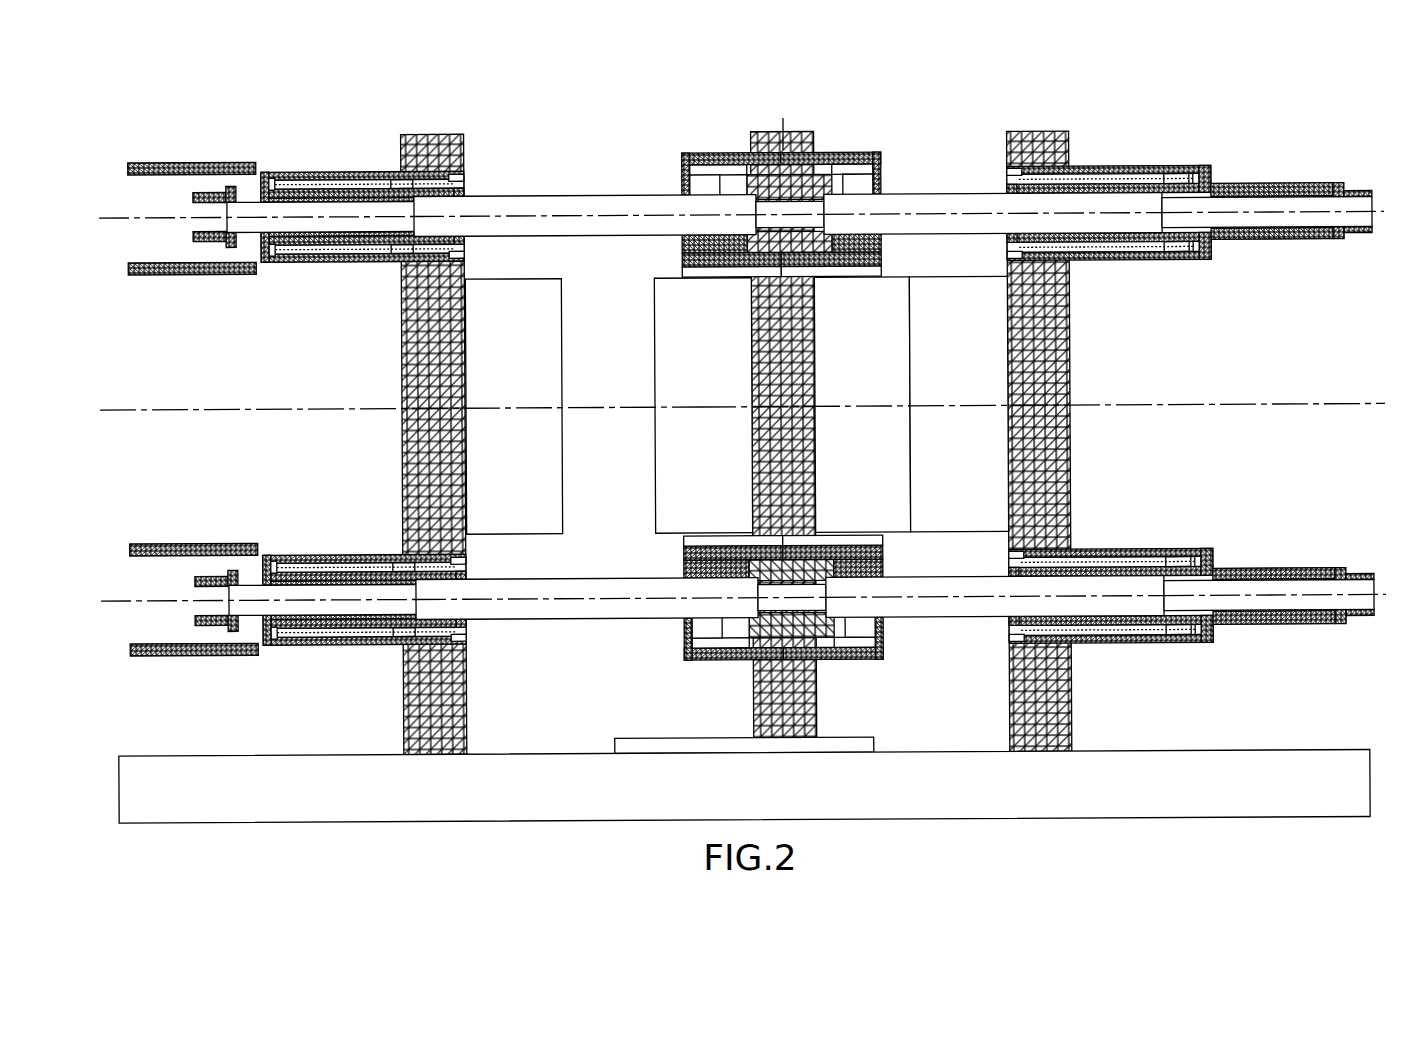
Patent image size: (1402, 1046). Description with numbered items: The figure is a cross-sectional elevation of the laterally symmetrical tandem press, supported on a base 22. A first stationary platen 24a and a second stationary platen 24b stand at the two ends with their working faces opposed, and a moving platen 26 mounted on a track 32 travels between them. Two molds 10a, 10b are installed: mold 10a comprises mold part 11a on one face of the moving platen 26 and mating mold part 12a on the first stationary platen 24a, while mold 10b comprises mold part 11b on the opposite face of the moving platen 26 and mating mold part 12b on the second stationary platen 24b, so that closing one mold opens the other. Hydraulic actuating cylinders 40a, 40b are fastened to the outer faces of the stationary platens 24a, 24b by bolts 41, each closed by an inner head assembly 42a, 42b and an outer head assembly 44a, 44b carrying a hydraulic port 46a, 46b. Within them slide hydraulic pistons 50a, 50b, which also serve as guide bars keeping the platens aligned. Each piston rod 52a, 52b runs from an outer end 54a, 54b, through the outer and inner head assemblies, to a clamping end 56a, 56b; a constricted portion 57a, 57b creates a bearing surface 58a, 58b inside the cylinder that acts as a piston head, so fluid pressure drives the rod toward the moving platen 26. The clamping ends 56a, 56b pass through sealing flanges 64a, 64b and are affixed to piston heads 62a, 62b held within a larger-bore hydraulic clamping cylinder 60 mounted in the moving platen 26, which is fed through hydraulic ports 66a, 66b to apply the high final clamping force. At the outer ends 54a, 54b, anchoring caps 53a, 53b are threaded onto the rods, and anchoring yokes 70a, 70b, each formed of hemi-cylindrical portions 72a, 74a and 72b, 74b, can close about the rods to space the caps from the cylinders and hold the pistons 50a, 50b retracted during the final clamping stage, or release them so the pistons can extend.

The mold 10a is at (553, 541).
The mold 10b is at (930, 542).
The mold part 11a is at (679, 384).
The mold part 11b is at (841, 384).
The mold part 12a is at (492, 389).
The mold part 12b is at (941, 382).
The base 22 is at (843, 796).
The first stationary platen 24a is at (432, 138).
The second stationary platen 24b is at (1042, 138).
The moving platen 26 is at (792, 150).
The track 32 is at (676, 746).
The hydraulic cylinder 40a is at (312, 264).
The hydraulic cylinder 40b is at (1120, 264).
The bolts 41 is at (465, 146).
The inner head assembly 42a is at (470, 192).
The inner head assembly 42b is at (1008, 188).
The outer head assembly 44a is at (260, 188).
The outer head assembly 44b is at (1212, 180).
The hydraulic port 46a is at (266, 178).
The hydraulic port 46b is at (1205, 168).
The hydraulic piston 50a is at (582, 200).
The hydraulic piston 50b is at (903, 190).
The piston rod 52a is at (550, 233).
The piston rod 52b is at (1108, 196).
The anchoring cap 53a is at (203, 247).
The anchoring cap 53b is at (1343, 241).
The outer end 54a is at (223, 222).
The outer end 54b is at (1347, 230).
The clamping end 56a is at (752, 207).
The clamping end 56b is at (820, 180).
The constricted portion 57a is at (337, 230).
The constricted portion 57b is at (1258, 222).
The bearing surface 58a is at (410, 212).
The bearing surface 58b is at (1182, 243).
The hydraulic clamping cylinder 60 is at (745, 258).
The piston head 62a is at (765, 172).
The piston head 62b is at (805, 172).
The sealing flange 64a is at (682, 252).
The sealing flange 64b is at (896, 258).
The hydraulic port 66a is at (688, 153).
The hydraulic port 66b is at (878, 153).
The anchoring yoke 70a is at (164, 158).
The anchoring yoke 70b is at (1280, 176).
The hemi-cylindrical portion 72a is at (178, 175).
The hemi-cylindrical portion 72b is at (1300, 184).
The hemi-cylindrical portion 74a is at (150, 276).
The hemi-cylindrical portion 74b is at (1303, 241).